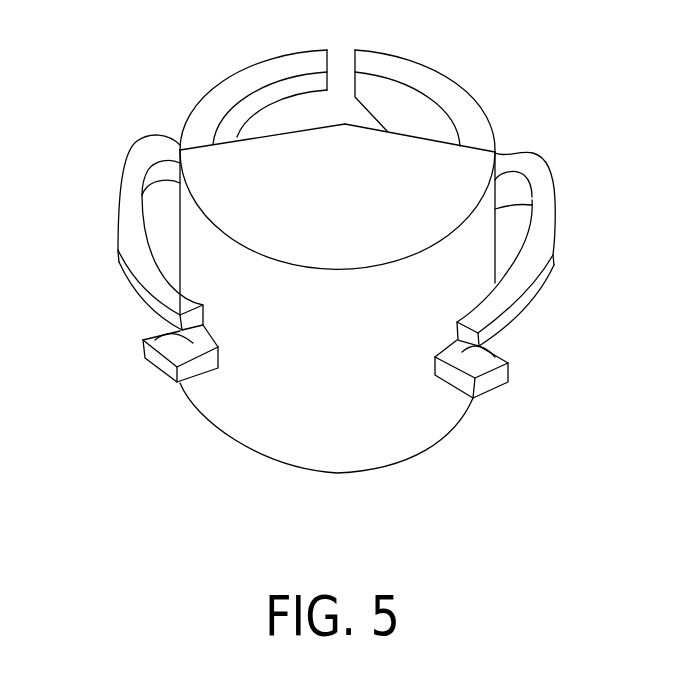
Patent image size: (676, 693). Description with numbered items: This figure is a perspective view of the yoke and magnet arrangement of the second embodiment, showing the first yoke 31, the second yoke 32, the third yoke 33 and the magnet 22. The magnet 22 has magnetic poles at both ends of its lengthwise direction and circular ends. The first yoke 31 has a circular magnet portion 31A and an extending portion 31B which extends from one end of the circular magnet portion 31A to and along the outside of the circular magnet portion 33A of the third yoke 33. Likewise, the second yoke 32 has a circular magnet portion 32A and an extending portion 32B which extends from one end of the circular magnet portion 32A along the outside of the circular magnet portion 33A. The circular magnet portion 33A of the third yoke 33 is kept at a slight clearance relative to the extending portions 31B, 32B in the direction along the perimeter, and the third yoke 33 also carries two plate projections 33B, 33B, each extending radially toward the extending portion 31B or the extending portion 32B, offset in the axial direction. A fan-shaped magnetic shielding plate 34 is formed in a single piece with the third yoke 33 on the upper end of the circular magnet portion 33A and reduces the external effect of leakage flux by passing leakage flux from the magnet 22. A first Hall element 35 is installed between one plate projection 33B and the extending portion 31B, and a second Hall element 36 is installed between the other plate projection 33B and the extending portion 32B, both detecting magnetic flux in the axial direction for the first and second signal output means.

The magnet 22 is at (332, 97).
The first yoke 31 is at (467, 118).
The circular magnet portion 31A is at (405, 72).
The extending portion 31B is at (507, 293).
The second yoke 32 is at (197, 125).
The circular magnet portion 32A is at (250, 80).
The extending portion 32B is at (130, 218).
The third yoke 33 is at (373, 448).
The circular magnet portion 33A is at (297, 442).
The plate projection 33B is at (167, 367).
The magnetic shielding plate 34 is at (473, 175).
The first Hall element 35 is at (505, 363).
The second Hall element 36 is at (148, 350).